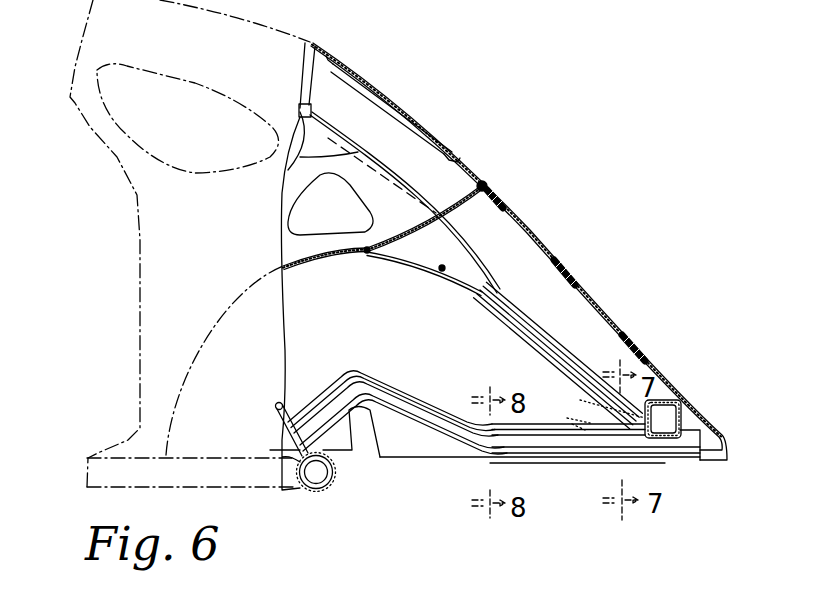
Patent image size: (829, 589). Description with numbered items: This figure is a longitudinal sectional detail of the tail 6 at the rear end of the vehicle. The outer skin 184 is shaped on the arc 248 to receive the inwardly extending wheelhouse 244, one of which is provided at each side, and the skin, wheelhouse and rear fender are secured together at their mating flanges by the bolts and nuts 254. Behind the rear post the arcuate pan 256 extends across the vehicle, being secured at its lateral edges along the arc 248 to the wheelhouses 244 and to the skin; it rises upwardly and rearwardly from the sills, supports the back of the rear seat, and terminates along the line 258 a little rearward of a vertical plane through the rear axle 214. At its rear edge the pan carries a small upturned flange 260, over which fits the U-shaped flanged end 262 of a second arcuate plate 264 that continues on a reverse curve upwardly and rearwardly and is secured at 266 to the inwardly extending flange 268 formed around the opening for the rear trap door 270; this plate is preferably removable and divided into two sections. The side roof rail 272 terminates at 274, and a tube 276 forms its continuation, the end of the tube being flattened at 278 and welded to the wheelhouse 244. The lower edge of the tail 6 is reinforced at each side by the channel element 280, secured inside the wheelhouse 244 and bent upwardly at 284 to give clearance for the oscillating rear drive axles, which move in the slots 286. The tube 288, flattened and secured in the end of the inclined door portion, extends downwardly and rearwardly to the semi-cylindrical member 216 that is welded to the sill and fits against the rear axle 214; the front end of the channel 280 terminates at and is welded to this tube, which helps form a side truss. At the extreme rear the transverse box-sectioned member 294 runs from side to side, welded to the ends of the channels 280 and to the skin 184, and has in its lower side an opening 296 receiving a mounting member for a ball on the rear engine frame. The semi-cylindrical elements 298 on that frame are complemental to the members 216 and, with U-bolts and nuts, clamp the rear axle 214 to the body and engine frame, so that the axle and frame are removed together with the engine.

The outer skin 184 is at (353, 60).
The rear axle 214 is at (325, 482).
The semi-cylindrical member 216 is at (283, 455).
The wheelhouse 244 is at (320, 322).
The arc 248 is at (325, 250).
The bolts and nuts 254 is at (442, 271).
The arcuate pan 256 is at (298, 263).
The line 258 is at (367, 254).
The upturned flange 260 is at (369, 246).
The U-shaped flanged end 262 is at (368, 245).
The second arcuate plate 264 is at (458, 198).
The securing point 266 is at (488, 182).
The inwardly extending flange 268 is at (494, 187).
The rear trap door 270 is at (537, 233).
The side roof rail 272 is at (300, 107).
The termination of side roof rail 274 is at (312, 43).
The tube 276 is at (340, 134).
The flattened end 278 is at (517, 305).
The channel element 280 is at (562, 448).
The upward bend 284 is at (347, 392).
The slot 286 is at (367, 440).
The tube 288 is at (276, 407).
The transverse box-sectioned member 294 is at (673, 397).
The opening 296 is at (663, 440).
The semi-cylindrical element 298 is at (322, 491).
The tail 6 is at (660, 368).